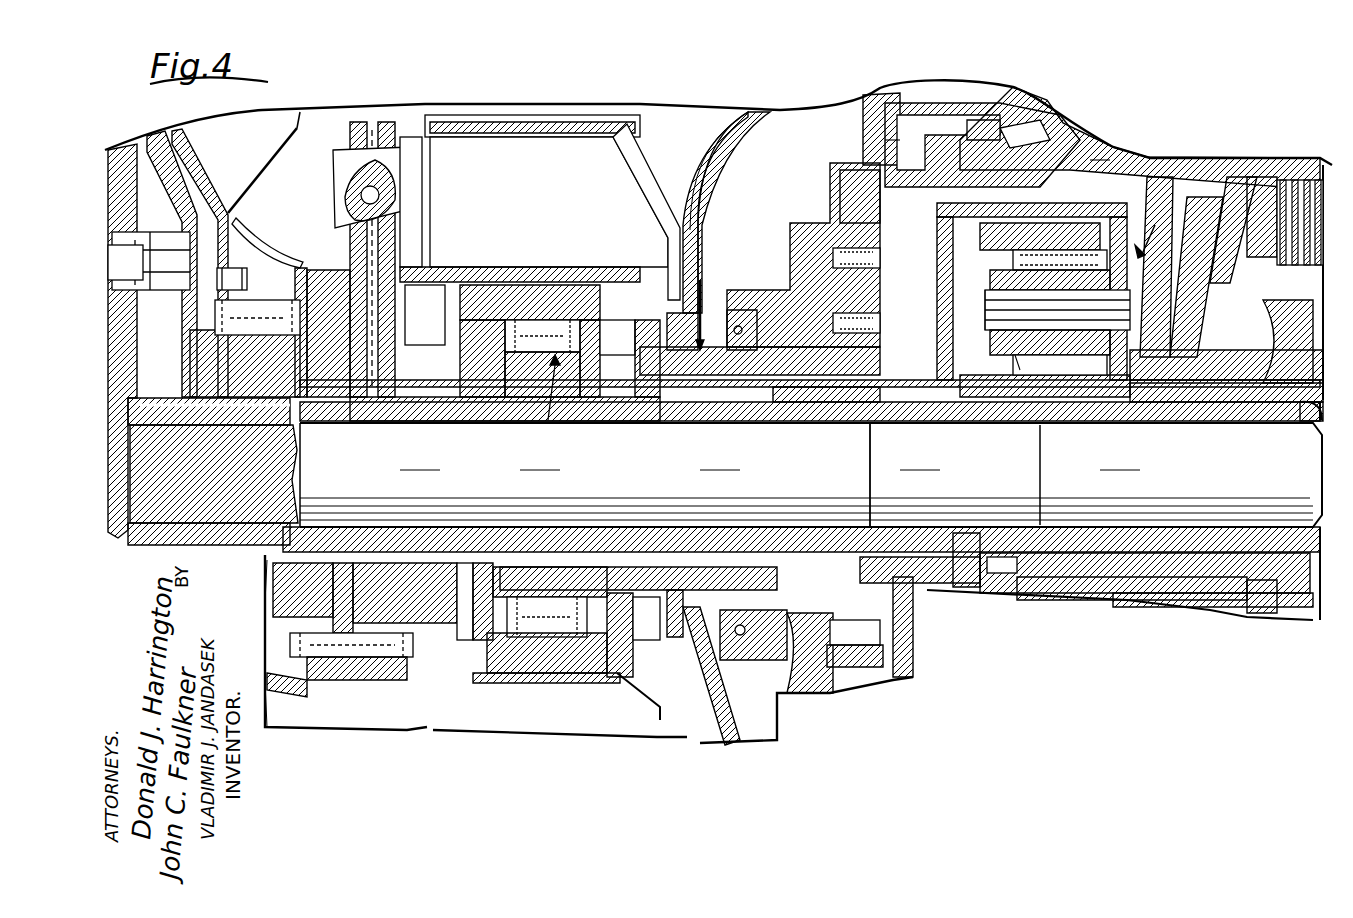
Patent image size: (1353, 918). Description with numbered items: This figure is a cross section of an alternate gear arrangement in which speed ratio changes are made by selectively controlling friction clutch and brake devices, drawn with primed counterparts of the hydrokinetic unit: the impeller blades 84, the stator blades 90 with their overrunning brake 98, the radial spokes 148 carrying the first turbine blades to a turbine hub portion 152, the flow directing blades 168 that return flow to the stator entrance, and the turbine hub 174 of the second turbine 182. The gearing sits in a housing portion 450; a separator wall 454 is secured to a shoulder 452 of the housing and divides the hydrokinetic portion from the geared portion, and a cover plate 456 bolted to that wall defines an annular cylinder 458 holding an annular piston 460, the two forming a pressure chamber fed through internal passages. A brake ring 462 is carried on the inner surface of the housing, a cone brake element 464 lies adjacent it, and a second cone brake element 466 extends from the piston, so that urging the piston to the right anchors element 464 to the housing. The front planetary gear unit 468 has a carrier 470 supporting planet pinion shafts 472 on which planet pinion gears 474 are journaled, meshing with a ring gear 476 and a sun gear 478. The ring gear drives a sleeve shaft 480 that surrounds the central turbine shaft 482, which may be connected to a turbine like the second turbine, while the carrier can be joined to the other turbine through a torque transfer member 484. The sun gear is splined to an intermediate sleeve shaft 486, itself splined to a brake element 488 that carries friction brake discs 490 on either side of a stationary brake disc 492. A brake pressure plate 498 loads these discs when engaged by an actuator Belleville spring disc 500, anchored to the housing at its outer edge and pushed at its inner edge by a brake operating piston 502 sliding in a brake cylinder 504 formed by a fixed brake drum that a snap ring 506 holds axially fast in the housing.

The impeller blades 84 is at (700, 140).
The stator blades 90 is at (532, 148).
The overrunning brake 98 is at (548, 420).
The radial spokes 148 is at (345, 247).
The turbine hub portion 152 is at (745, 265).
The flow directing blades 168 is at (312, 152).
The turbine hub 174 is at (270, 425).
The second turbine 182 is at (272, 145).
The housing portion 450 is at (1100, 170).
The shoulder 452 is at (880, 100).
The separator wall 454 is at (835, 212).
The cover plate 456 is at (860, 180).
The annular cylinder 458 is at (880, 127).
The annular piston 460 is at (885, 147).
The brake ring 462 is at (1025, 128).
The cone brake element 464 is at (1065, 158).
The cone brake element 466 is at (1010, 130).
The front planetary gear unit 468 is at (1232, 242).
The carrier 470 is at (1085, 262).
The planet pinion shafts 472 is at (1080, 395).
The planet pinion gears 474 is at (1022, 360).
The ring gear 476 is at (1073, 232).
The sun gear 478 is at (977, 430).
The sleeve shaft 480 is at (1220, 385).
The central turbine shaft 482 is at (1245, 505).
The torque transfer member 484 is at (945, 405).
The intermediate sleeve shaft 486 is at (1178, 395).
The brake element 488 is at (1295, 405).
The friction brake discs 490 is at (1318, 182).
The stationary brake disc 492 is at (1306, 182).
The brake pressure plate 498 is at (1298, 185).
The actuator Belleville spring disc 500 is at (1290, 185).
The brake operating piston 502 is at (1262, 200).
The brake cylinder 504 is at (1235, 200).
The snap ring 506 is at (1165, 225).